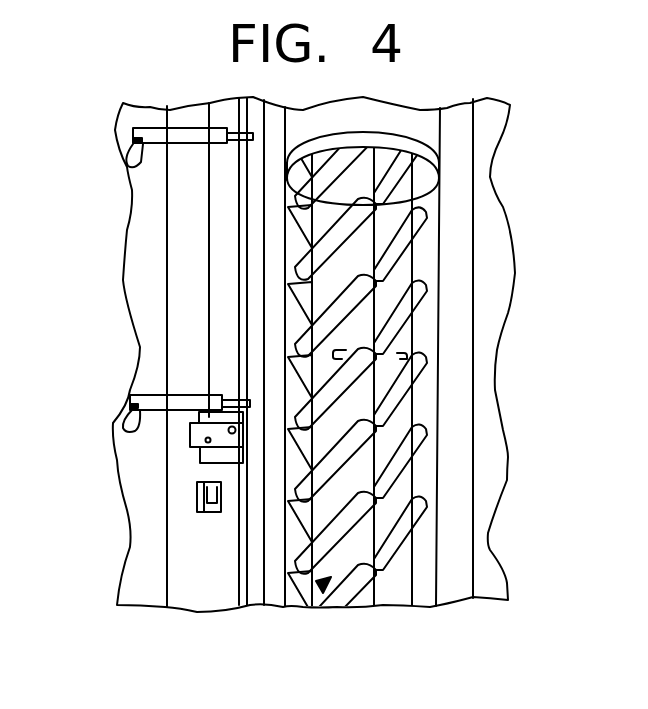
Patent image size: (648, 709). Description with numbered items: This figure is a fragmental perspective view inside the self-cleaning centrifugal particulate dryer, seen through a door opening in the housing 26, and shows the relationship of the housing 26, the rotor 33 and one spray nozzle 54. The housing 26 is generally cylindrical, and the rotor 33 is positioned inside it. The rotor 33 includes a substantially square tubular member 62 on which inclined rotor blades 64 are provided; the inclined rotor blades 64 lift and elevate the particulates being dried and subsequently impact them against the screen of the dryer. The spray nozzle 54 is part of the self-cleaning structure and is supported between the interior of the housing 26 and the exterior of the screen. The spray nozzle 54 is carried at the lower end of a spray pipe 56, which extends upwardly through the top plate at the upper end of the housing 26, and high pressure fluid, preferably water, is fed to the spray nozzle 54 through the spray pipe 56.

The housing 26 is at (473, 236).
The rotor 33 is at (320, 586).
The spray nozzle 54 is at (195, 447).
The spray pipe 56 is at (217, 251).
The square tubular member 62 is at (388, 597).
The rotor blades 64 is at (420, 437).